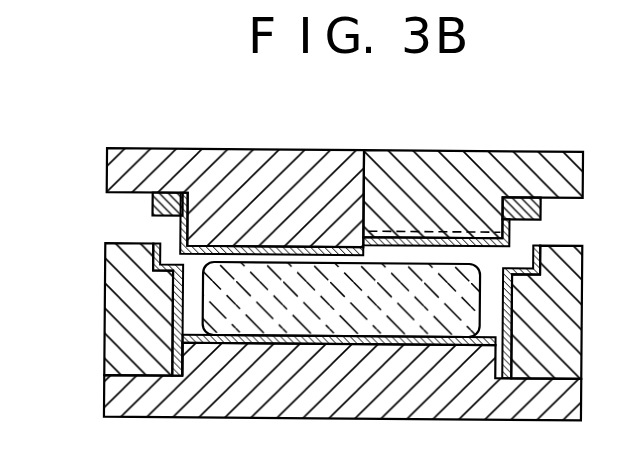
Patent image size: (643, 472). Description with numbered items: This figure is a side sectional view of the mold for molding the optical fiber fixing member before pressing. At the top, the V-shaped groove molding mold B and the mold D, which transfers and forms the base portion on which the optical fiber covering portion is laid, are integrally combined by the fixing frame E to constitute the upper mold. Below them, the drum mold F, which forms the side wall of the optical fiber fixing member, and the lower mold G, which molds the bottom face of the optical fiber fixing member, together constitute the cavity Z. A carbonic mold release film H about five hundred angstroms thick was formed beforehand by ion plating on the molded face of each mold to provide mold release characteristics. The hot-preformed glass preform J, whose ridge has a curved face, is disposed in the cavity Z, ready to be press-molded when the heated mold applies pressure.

The mold D is at (246, 168).
The V-shaped groove molding mold B is at (500, 163).
The fixing frame E is at (155, 205).
The drum mold F is at (120, 288).
The carbonic mold release film H is at (326, 250).
The glass preform J is at (460, 322).
The cavity Z is at (198, 337).
The lower mold G is at (309, 402).